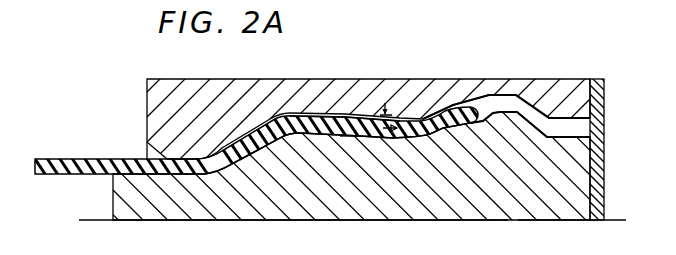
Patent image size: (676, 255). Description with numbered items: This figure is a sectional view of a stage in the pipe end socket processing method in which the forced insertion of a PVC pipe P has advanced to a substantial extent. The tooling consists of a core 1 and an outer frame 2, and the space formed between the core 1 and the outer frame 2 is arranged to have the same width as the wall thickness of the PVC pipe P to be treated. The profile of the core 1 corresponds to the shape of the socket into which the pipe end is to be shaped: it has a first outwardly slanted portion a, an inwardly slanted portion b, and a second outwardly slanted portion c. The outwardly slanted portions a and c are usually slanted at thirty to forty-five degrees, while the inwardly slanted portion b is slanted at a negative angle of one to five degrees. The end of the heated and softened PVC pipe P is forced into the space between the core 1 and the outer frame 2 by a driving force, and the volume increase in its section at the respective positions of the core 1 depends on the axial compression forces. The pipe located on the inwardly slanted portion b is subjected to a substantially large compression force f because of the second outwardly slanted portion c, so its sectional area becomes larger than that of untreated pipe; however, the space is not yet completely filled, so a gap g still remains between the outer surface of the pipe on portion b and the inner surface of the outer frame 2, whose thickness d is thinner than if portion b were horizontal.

The outer frame 2 is at (271, 97).
The core 1 is at (197, 198).
The PVC pipe P is at (72, 173).
The gap g is at (346, 113).
The gap dimension d is at (388, 117).
The compression force f is at (409, 125).
The first outwardly slanted portion a is at (258, 152).
The inwardly slanted portion b is at (350, 139).
The second outwardly slanted portion c is at (439, 136).